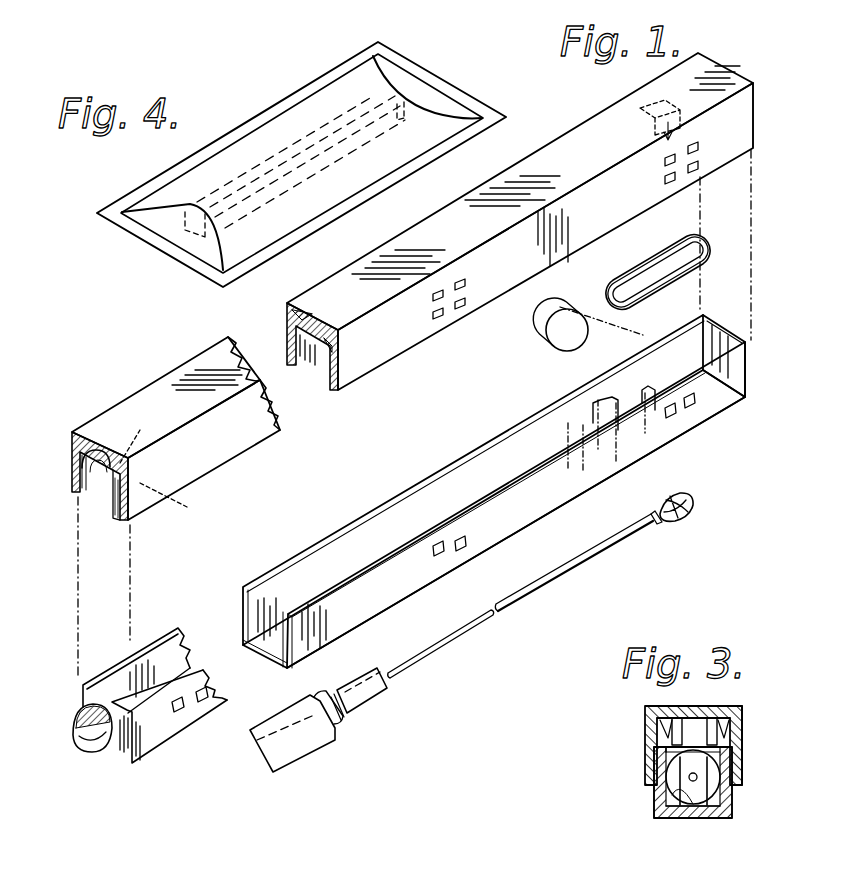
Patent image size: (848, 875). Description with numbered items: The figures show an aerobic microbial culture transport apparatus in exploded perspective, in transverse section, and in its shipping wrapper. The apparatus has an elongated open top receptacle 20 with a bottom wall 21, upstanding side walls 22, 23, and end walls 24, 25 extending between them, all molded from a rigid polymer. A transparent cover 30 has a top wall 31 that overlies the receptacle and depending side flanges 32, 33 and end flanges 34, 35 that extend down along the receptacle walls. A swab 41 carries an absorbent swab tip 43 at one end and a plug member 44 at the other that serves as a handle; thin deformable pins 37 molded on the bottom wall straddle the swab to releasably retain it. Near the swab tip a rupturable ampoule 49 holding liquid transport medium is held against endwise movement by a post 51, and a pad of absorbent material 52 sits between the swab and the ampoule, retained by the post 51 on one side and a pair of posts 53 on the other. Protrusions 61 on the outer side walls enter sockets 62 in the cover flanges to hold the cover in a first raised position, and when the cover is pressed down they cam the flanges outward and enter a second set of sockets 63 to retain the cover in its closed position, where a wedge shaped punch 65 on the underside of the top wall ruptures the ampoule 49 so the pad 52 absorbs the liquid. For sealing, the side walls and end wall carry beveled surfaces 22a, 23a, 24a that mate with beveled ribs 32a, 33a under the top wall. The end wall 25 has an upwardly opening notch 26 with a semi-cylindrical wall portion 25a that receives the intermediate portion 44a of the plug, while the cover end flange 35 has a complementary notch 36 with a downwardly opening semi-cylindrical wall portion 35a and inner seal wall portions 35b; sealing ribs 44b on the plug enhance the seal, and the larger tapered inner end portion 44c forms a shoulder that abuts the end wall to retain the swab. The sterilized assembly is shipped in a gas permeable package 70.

In FIG. 1, the open top receptacle 20 is at (513, 481).
In FIG. 1, the bottom wall 21 is at (278, 660).
In FIG. 3, the bottom wall 21 is at (682, 818).
In FIG. 1, the side wall 22 is at (378, 560).
In FIG. 3, the side wall 22 is at (735, 800).
In FIG. 1, the beveled surface 22a is at (289, 608).
In FIG. 3, the beveled surface 22a is at (735, 748).
In FIG. 1, the side wall 23 is at (292, 585).
In FIG. 3, the side wall 23 is at (654, 800).
In FIG. 1, the beveled surface 23a is at (405, 492).
In FIG. 3, the beveled surface 23a is at (660, 748).
In FIG. 1, the end wall 24 is at (748, 345).
In FIG. 1, the beveled surface 24a is at (716, 320).
In FIG. 1, the end wall 25 is at (144, 717).
In FIG. 1, the semi-cylindrical wall portion 25a is at (96, 748).
In FIG. 1, the notch 26 is at (103, 705).
In FIG. 1, the cover 30 is at (520, 222).
In FIG. 1, the top wall 31 is at (388, 260).
In FIG. 1, the side flange 32 is at (512, 270).
In FIG. 1, the rib 32a is at (340, 345).
In FIG. 1, the side flange 33 is at (318, 348).
In FIG. 1, the rib 33a is at (309, 316).
In FIG. 3, the end flange 34 is at (740, 716).
In FIG. 1, the end flange 35 is at (176, 444).
In FIG. 3, the end flange 35 is at (645, 718).
In FIG. 1, the semi-cylindrical wall portion 35a is at (140, 431).
In FIG. 1, the inner seal wall portion 35b is at (188, 507).
In FIG. 1, the notch 36 is at (110, 462).
In FIG. 1, the pins 37 is at (583, 435).
In FIG. 3, the pins 37 is at (672, 818).
In FIG. 1, the swab 41 is at (580, 575).
In FIG. 1, the swab tip 43 is at (690, 512).
In FIG. 1, the plug member 44 is at (372, 692).
In FIG. 1, the intermediate portion 44a is at (340, 722).
In FIG. 1, the sealing ribs 44b is at (338, 690).
In FIG. 1, the inner end portion 44c is at (384, 688).
In FIG. 1, the rupturable ampoule 49 is at (660, 262).
In FIG. 1, the post 51 is at (650, 388).
In FIG. 1, the pad of absorbent material 52 is at (582, 340).
In FIG. 1, the posts 53 is at (600, 405).
In FIG. 1, the protrusions 61 is at (692, 400).
In FIG. 3, the protrusions 61 is at (655, 765).
In FIG. 1, the sockets 62 is at (463, 308).
In FIG. 1, the sockets 63 is at (462, 282).
In FIG. 3, the sockets 63 is at (645, 737).
In FIG. 1, the wedge shaped punch 65 is at (650, 140).
In FIG. 3, the wedge shaped punch 65 is at (700, 718).
In FIG. 4, the package 70 is at (430, 84).